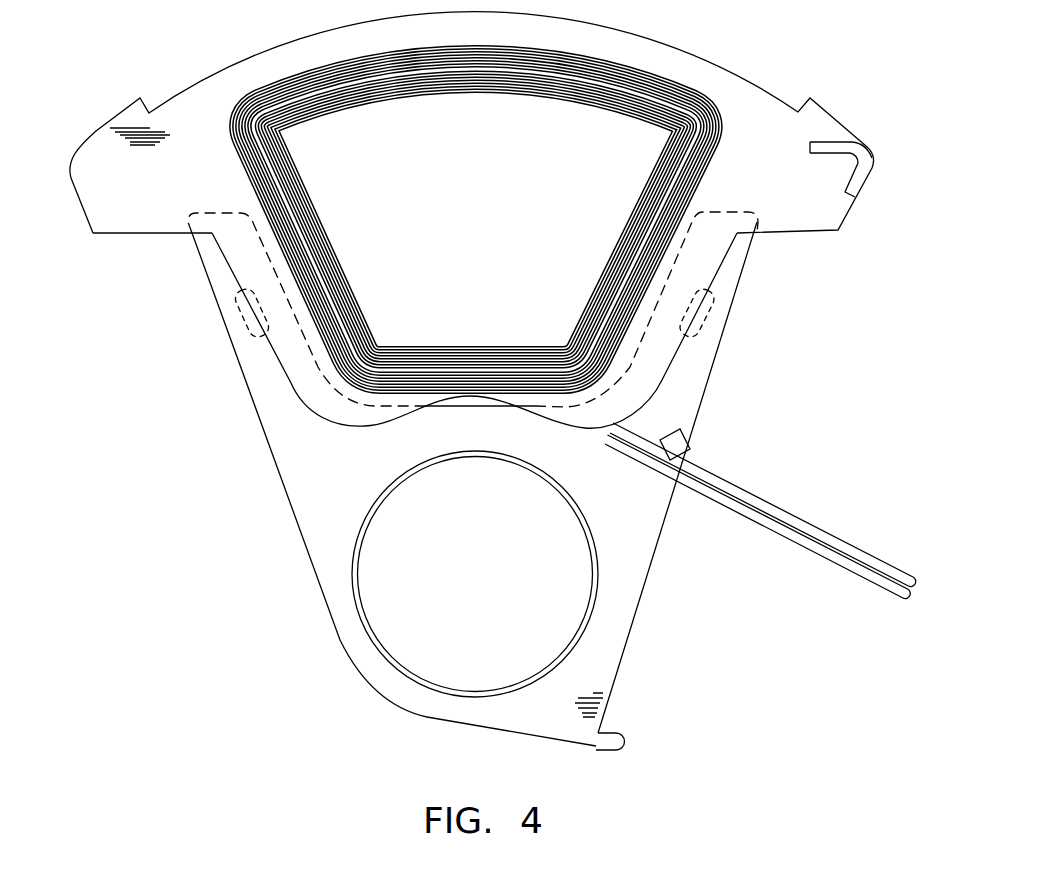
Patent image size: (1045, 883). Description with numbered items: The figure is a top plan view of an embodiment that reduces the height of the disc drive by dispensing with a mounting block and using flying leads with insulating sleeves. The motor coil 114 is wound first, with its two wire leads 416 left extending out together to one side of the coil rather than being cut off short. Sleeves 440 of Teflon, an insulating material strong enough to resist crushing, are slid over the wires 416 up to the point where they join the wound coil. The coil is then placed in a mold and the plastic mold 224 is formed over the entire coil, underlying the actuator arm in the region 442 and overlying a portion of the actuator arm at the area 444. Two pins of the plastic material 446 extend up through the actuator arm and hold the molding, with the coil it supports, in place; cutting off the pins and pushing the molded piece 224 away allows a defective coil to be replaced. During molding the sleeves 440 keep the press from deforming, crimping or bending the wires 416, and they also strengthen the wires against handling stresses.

The motor coil 114 is at (668, 93).
The plastic mold 224 is at (832, 207).
The region of the actuator arm 442 is at (710, 263).
The area of the actuator arm 444 is at (390, 409).
The pins of the plastic material 446 is at (245, 317).
The sleeves 440 is at (653, 425).
The wire leads 416 is at (805, 523).